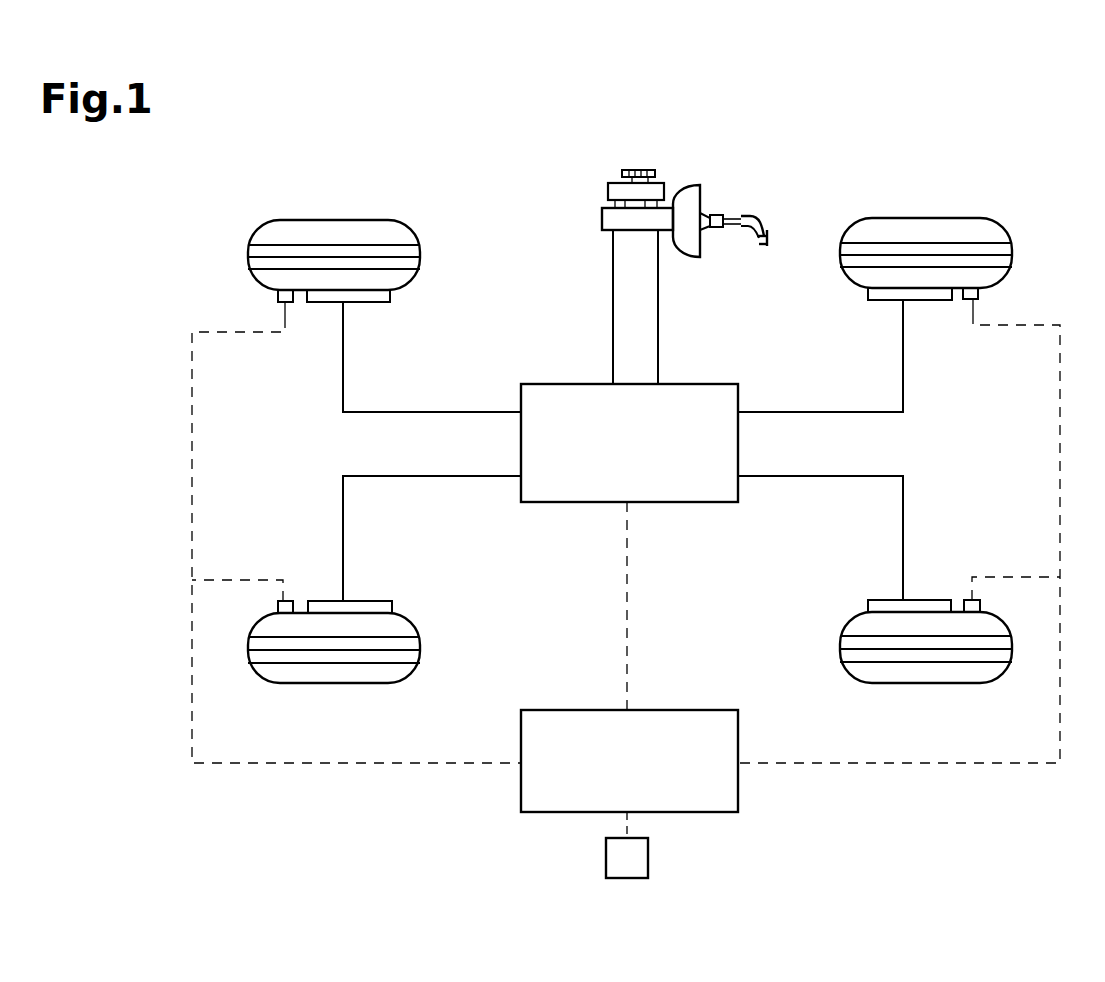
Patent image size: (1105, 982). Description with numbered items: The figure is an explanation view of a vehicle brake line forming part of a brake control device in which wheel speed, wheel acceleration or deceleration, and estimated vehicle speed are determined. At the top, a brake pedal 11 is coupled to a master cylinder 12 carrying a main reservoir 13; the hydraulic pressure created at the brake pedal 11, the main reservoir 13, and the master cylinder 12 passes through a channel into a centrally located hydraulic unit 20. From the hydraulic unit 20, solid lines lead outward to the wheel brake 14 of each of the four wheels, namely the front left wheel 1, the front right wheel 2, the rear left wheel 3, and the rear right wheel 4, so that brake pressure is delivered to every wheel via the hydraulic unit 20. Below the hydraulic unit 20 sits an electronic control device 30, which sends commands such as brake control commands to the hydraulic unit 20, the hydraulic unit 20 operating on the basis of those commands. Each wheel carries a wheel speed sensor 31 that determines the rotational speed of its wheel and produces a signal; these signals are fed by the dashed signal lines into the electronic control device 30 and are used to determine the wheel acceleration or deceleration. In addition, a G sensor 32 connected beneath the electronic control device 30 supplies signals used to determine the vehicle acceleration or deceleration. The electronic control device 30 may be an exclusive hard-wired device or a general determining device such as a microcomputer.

The front left wheel 1 is at (328, 683).
The front right wheel 2 is at (328, 220).
The rear left wheel 3 is at (932, 683).
The rear right wheel 4 is at (932, 218).
The brake pedal 11 is at (751, 212).
The master cylinder 12 is at (602, 218).
The main reservoir 13 is at (608, 195).
The wheel brake 14 is at (380, 302).
The hydraulic unit 20 is at (545, 502).
The electronic control device 30 is at (665, 710).
The wheel speed sensor 31 is at (290, 305).
The G sensor 32 is at (648, 855).